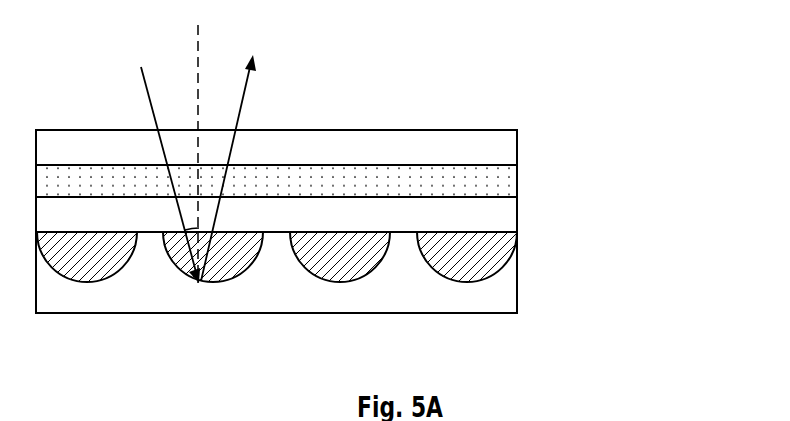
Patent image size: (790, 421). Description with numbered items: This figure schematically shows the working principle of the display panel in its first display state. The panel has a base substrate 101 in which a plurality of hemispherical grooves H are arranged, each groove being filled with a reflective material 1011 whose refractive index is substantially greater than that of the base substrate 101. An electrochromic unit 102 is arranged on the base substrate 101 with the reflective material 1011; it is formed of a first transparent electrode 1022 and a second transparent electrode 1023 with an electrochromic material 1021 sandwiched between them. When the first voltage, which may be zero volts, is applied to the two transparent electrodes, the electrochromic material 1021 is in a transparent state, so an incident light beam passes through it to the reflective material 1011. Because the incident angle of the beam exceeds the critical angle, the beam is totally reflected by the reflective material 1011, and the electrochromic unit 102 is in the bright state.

The base substrate 101 is at (518, 282).
The reflective material 1011 is at (490, 247).
The electrochromic unit 102 is at (388, 181).
The electrochromic material 1021 is at (518, 182).
The first transparent electrode 1022 is at (336, 215).
The second transparent electrode 1023 is at (518, 147).
The hemispherical grooves H is at (472, 283).